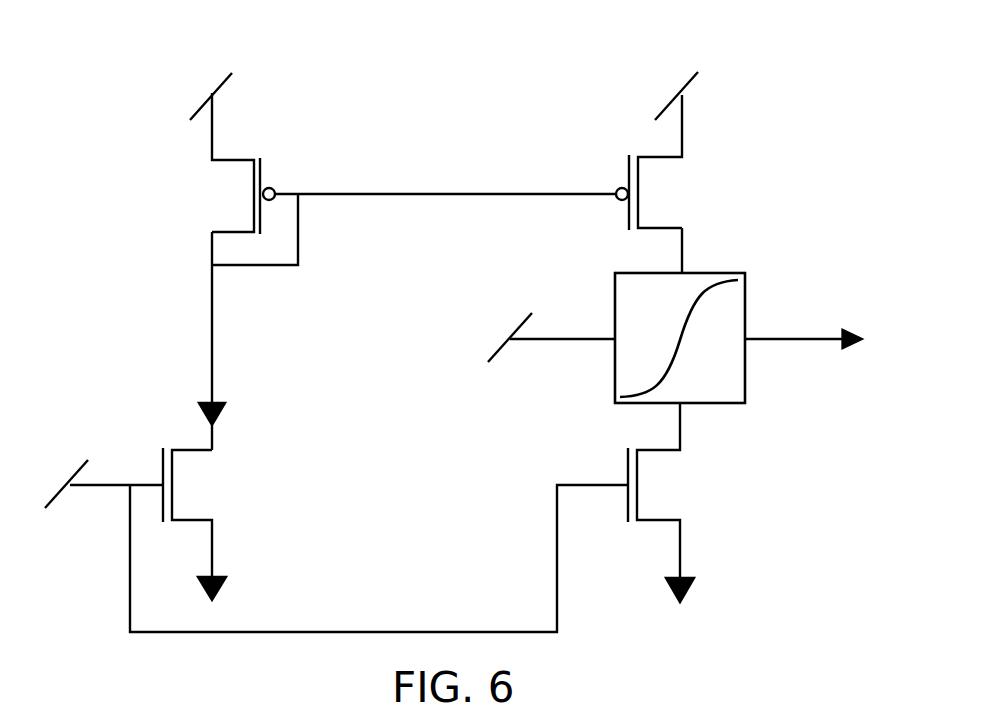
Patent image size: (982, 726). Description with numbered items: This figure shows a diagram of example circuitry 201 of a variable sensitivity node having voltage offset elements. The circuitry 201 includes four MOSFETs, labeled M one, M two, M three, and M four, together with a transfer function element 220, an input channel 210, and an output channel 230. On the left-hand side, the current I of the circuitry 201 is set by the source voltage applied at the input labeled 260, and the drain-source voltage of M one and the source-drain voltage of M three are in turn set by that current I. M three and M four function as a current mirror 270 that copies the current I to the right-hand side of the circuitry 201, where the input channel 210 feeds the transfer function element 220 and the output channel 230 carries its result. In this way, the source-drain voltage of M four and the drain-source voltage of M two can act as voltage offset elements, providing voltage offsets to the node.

The circuitry 201 is at (478, 82).
The current mirror 270 is at (143, 145).
The input channel 210 is at (577, 343).
The transfer function element 220 is at (680, 338).
The output channel 230 is at (777, 343).
The source voltage Vs input 260 is at (105, 490).